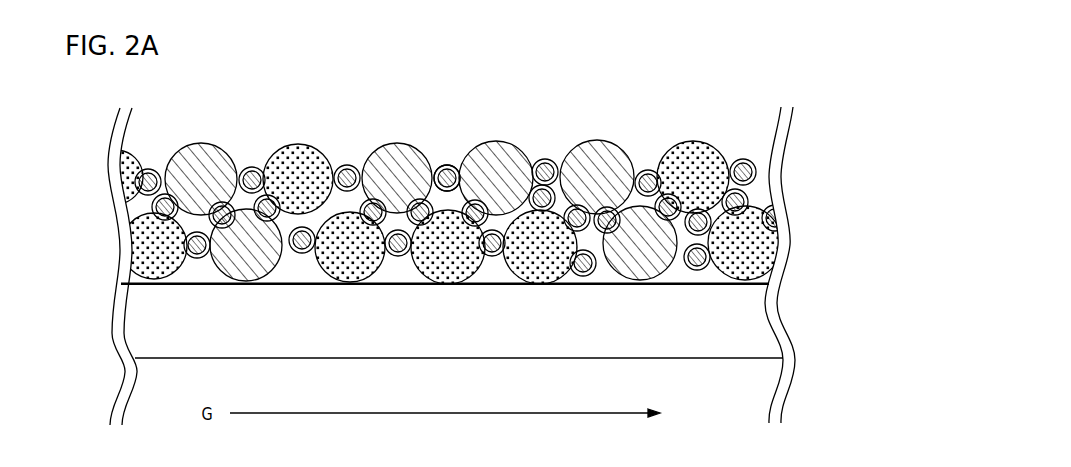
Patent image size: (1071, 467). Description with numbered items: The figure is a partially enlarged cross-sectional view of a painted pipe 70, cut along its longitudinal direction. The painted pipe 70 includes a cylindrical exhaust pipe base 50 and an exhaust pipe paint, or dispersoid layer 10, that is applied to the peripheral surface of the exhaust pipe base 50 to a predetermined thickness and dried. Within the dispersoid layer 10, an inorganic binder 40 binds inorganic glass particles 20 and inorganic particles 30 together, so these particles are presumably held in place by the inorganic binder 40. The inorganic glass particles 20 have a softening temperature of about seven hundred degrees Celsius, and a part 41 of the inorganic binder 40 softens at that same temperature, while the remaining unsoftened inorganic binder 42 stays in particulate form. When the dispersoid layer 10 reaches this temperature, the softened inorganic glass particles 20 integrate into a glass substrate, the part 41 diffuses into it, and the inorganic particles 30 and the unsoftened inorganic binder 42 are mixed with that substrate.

The dispersoid layer 10 is at (614, 131).
The inorganic glass particles 20 is at (200, 147).
The inorganic particles 30 is at (302, 147).
The inorganic binder 40 is at (456, 130).
The part of the inorganic binder 41 is at (440, 168).
The unsoftened inorganic binder 42 is at (450, 166).
The exhaust pipe base 50 is at (723, 338).
The painted pipe 70 is at (714, 92).